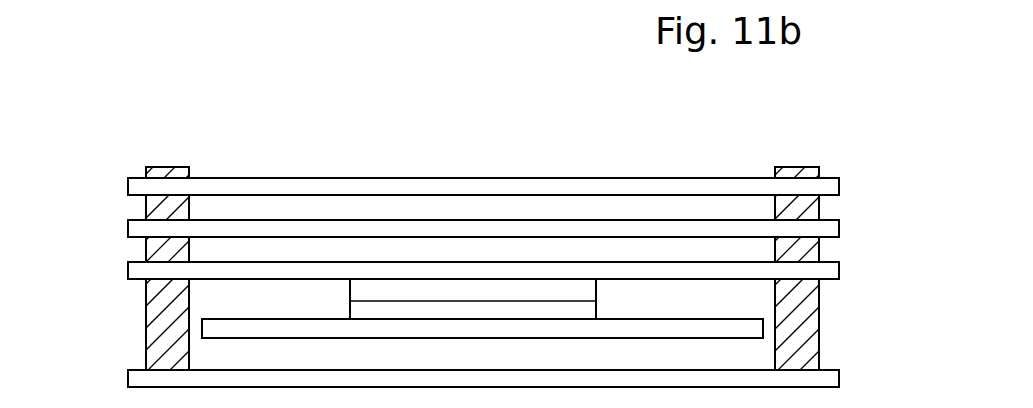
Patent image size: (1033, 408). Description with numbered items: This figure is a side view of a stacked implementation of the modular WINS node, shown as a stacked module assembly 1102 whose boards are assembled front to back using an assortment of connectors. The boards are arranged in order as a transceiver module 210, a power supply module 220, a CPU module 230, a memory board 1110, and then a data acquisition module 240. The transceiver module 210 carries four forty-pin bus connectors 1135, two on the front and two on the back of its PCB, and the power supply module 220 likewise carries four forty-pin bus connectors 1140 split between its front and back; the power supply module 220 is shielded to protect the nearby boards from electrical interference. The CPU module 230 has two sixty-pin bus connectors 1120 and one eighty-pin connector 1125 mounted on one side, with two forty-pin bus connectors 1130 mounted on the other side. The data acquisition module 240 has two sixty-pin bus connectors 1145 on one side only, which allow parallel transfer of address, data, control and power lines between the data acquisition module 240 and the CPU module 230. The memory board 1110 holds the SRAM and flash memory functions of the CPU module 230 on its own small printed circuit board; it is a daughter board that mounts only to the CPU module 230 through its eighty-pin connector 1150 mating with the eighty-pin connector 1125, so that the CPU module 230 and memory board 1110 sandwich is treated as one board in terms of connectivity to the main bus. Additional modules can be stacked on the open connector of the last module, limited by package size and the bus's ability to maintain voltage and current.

The stacked module assembly 1102 is at (312, 107).
The transceiver module 210 is at (128, 183).
The power supply module 220 is at (128, 226).
The CPU module 230 is at (128, 269).
The data acquisition module 240 is at (128, 379).
The memory board 1110 is at (198, 328).
The 60-pin bus connectors 1120 is at (189, 350).
The 80-pin connector 1125 is at (596, 292).
The 40-pin bus connectors 1130 is at (189, 245).
The 40-pin bus connectors 1135 is at (174, 167).
The 40-pin bus connectors 1140 is at (819, 200).
The 60-pin bus connectors 1145 is at (795, 341).
The 80-pin connector 1150 is at (350, 310).